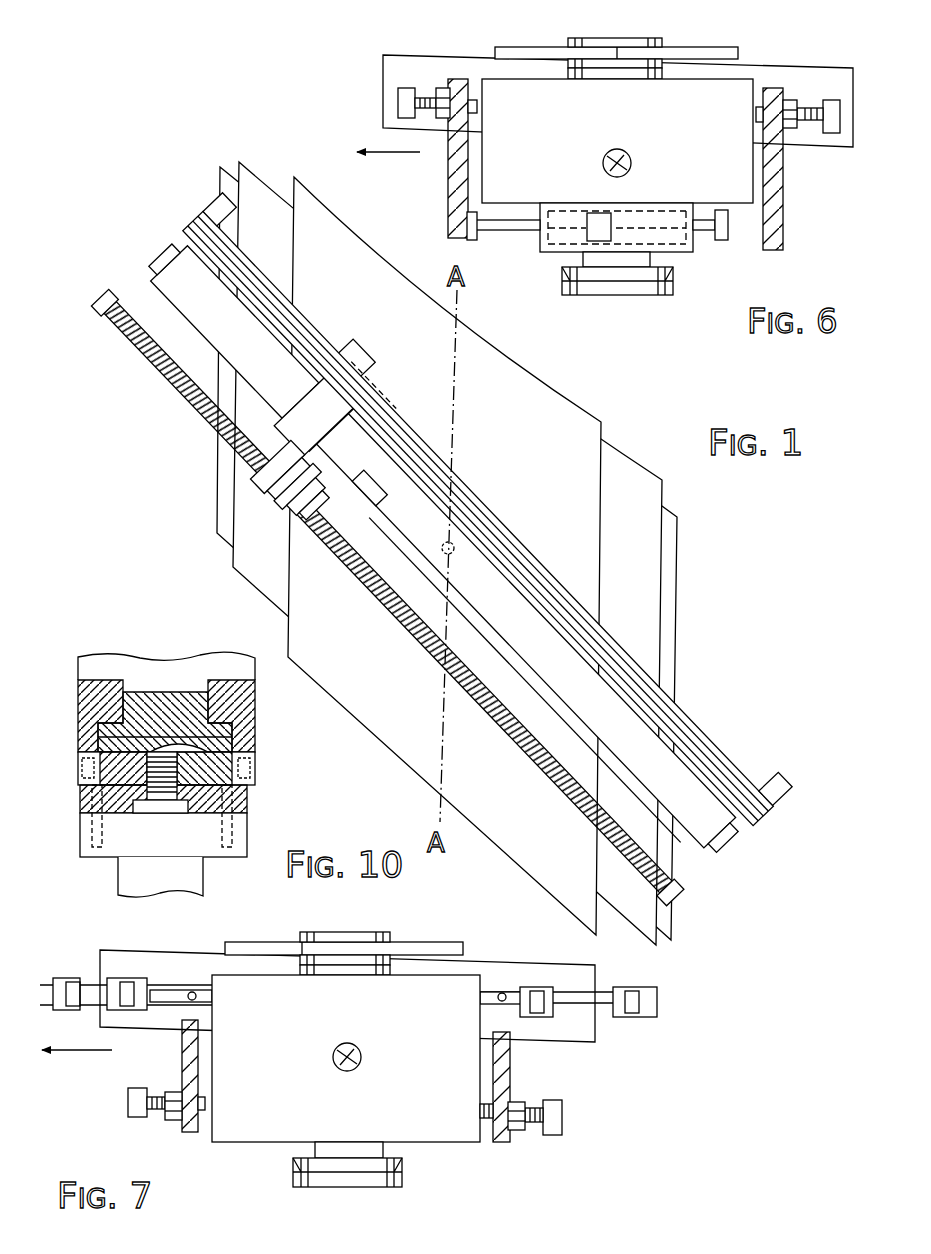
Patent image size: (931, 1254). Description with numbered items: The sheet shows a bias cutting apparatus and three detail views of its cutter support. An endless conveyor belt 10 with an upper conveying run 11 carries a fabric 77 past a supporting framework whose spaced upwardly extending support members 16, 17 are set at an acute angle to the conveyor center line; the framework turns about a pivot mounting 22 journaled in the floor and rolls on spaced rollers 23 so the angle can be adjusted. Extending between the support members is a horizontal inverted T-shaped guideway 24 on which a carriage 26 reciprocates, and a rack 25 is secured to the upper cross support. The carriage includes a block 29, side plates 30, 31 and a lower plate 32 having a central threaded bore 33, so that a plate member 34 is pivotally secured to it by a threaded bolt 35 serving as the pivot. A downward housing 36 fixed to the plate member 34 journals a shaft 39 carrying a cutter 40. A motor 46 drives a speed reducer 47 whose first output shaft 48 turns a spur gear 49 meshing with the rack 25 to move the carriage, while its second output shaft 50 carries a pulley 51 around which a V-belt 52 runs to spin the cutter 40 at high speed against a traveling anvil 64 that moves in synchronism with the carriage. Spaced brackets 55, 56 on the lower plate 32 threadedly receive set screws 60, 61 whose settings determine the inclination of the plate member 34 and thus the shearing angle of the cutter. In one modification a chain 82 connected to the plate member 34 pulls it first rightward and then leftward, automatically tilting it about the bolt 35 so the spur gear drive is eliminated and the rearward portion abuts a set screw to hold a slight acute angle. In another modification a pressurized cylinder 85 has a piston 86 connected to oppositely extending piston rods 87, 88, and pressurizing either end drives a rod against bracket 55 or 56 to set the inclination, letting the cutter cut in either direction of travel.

In FIG. 1, the endless conveyor belt 10 is at (645, 410).
In FIG. 1, the upper conveying run 11 is at (664, 493).
In FIG. 1, the support member 16 is at (720, 850).
In FIG. 1, the support member 17 is at (187, 252).
In FIG. 1, the pivot mounting 22 is at (455, 545).
In FIG. 1, the rollers 23 is at (225, 195).
In FIG. 1, the guideway 24 is at (668, 767).
In FIG. 10, the guideway 24 is at (170, 700).
In FIG. 1, the rack 25 is at (573, 803).
In FIG. 1, the carriage 26 is at (414, 487).
In FIG. 10, the block 29 is at (172, 668).
In FIG. 10, the side plate 30 is at (98, 698).
In FIG. 10, the side plate 31 is at (245, 716).
In FIG. 10, the lower plate 32 is at (98, 737).
In FIG. 10, the threaded bore 33 is at (180, 752).
In FIG. 6, the plate member 34 is at (572, 124).
In FIG. 7, the plate member 34 is at (272, 1042).
In FIG. 10, the plate member 34 is at (98, 791).
In FIG. 7, the threaded bolt 35 is at (349, 1071).
In FIG. 10, the threaded bolt 35 is at (170, 795).
In FIG. 10, the housing 36 is at (128, 873).
In FIG. 1, the shaft 39 is at (292, 490).
In FIG. 1, the cutter 40 is at (356, 362).
In FIG. 6, the cutter 40 is at (523, 44).
In FIG. 7, the cutter 40 is at (443, 936).
In FIG. 1, the motor 46 is at (343, 350).
In FIG. 1, the speed reducer 47 is at (400, 427).
In FIG. 1, the first output shaft 48 is at (300, 512).
In FIG. 1, the spur gear 49 is at (310, 538).
In FIG. 1, the second output shaft 50 is at (380, 497).
In FIG. 1, the pulley 51 is at (345, 542).
In FIG. 1, the V-belt 52 is at (360, 572).
In FIG. 6, the bracket 55 is at (628, 152).
In FIG. 7, the bracket 55 is at (498, 1144).
In FIG. 6, the bracket 56 is at (455, 188).
In FIG. 7, the bracket 56 is at (186, 1133).
In FIG. 6, the set screw 60 is at (829, 133).
In FIG. 7, the set screw 60 is at (553, 1098).
In FIG. 6, the set screw 61 is at (405, 90).
In FIG. 7, the set screw 61 is at (128, 1108).
In FIG. 1, the anvil 64 is at (336, 340).
In FIG. 1, the fabric 77 is at (565, 398).
In FIG. 7, the chain 82 is at (657, 1000).
In FIG. 6, the pressurized cylinder 85 is at (678, 247).
In FIG. 6, the piston 86 is at (578, 212).
In FIG. 6, the piston rod 87 is at (503, 230).
In FIG. 6, the piston rod 88 is at (707, 222).